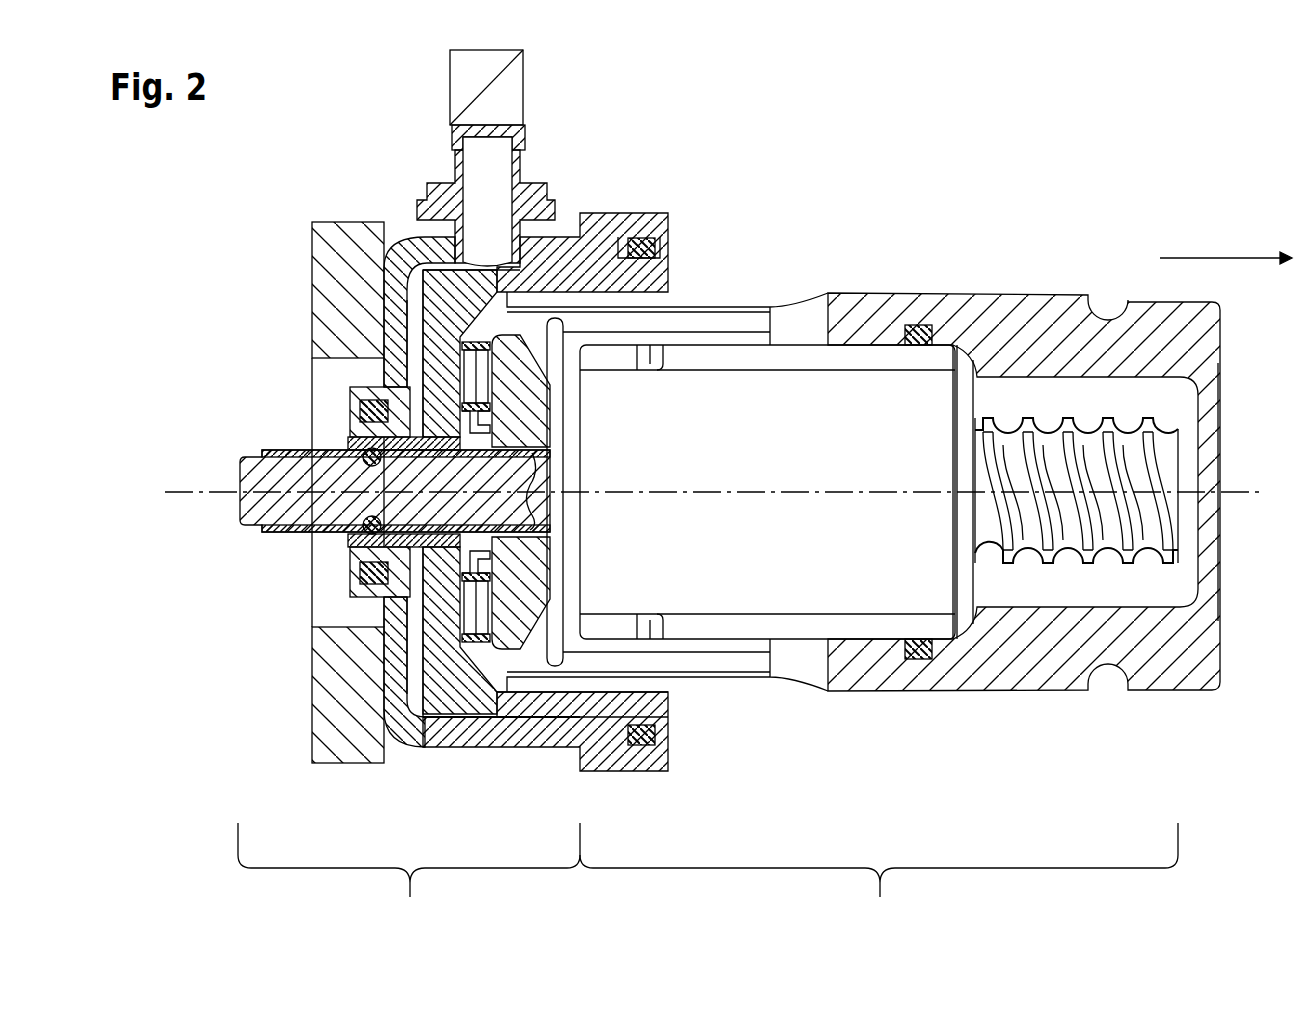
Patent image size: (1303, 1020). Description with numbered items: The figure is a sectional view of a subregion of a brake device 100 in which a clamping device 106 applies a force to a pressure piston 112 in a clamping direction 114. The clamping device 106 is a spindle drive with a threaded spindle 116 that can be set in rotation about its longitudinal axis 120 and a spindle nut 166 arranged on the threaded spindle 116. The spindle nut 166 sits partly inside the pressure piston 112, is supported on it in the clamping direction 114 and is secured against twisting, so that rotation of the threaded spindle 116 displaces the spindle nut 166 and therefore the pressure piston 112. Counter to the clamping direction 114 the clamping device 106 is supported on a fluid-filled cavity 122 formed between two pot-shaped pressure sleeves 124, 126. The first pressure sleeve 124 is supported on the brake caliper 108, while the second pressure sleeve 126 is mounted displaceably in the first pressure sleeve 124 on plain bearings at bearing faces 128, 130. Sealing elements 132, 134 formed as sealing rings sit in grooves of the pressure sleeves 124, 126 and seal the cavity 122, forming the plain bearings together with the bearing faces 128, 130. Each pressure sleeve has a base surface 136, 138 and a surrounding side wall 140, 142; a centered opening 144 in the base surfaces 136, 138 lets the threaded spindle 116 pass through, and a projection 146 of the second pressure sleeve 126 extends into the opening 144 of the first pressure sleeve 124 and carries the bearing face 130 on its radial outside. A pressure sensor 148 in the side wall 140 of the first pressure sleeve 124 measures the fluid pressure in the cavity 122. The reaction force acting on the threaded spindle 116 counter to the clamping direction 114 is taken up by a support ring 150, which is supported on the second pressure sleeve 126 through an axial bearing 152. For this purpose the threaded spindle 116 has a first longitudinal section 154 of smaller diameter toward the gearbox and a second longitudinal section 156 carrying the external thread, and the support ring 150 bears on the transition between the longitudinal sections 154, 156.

The brake device 100 is at (932, 80).
The clamping device 106 is at (730, 238).
The brake caliper 108 is at (345, 270).
The pressure piston 112 is at (1012, 318).
The clamping direction 114 is at (1216, 258).
The threaded spindle 116 is at (270, 510).
The longitudinal axis 120 is at (858, 490).
The fluid-filled cavity 122 is at (400, 712).
The first pressure sleeve 124 is at (396, 693).
The second pressure sleeve 126 is at (528, 708).
The bearing face 128 is at (673, 260).
The bearing face 130 is at (372, 410).
The sealing element 132 is at (628, 253).
The sealing element 134 is at (388, 400).
The base surface 136 is at (380, 660).
The base surface 138 is at (430, 360).
The side wall 140 is at (482, 734).
The side wall 142 is at (563, 283).
The opening 144 is at (345, 445).
The projection 146 is at (372, 575).
The pressure sensor 148 is at (448, 92).
The support ring 150 is at (512, 595).
The axial bearing 152 is at (473, 377).
The first longitudinal section 154 is at (409, 876).
The second longitudinal section 156 is at (879, 876).
The spindle nut 166 is at (750, 550).